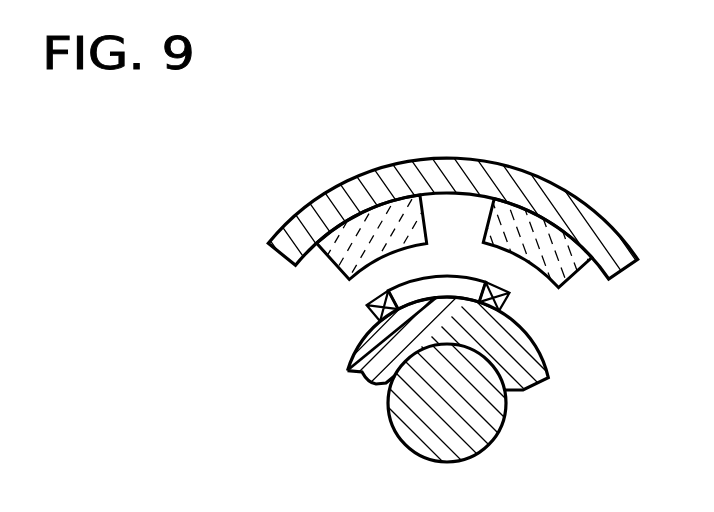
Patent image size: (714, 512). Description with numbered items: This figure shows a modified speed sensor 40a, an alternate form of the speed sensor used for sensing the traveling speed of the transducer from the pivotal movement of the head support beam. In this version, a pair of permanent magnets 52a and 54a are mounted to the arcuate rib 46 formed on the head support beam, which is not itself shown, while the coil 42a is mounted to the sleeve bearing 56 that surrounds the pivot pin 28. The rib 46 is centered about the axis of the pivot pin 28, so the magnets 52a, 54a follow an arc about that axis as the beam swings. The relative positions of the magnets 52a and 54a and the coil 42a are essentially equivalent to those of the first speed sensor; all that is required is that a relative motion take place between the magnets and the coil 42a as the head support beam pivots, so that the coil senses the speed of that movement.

The modified speed sensor 40a is at (287, 205).
The coil 42a is at (448, 256).
The rib 46 is at (593, 217).
The permanent magnet 52a is at (334, 262).
The permanent magnet 54a is at (586, 290).
The sleeve bearing 56 is at (550, 378).
The pivot pin 28 is at (493, 425).